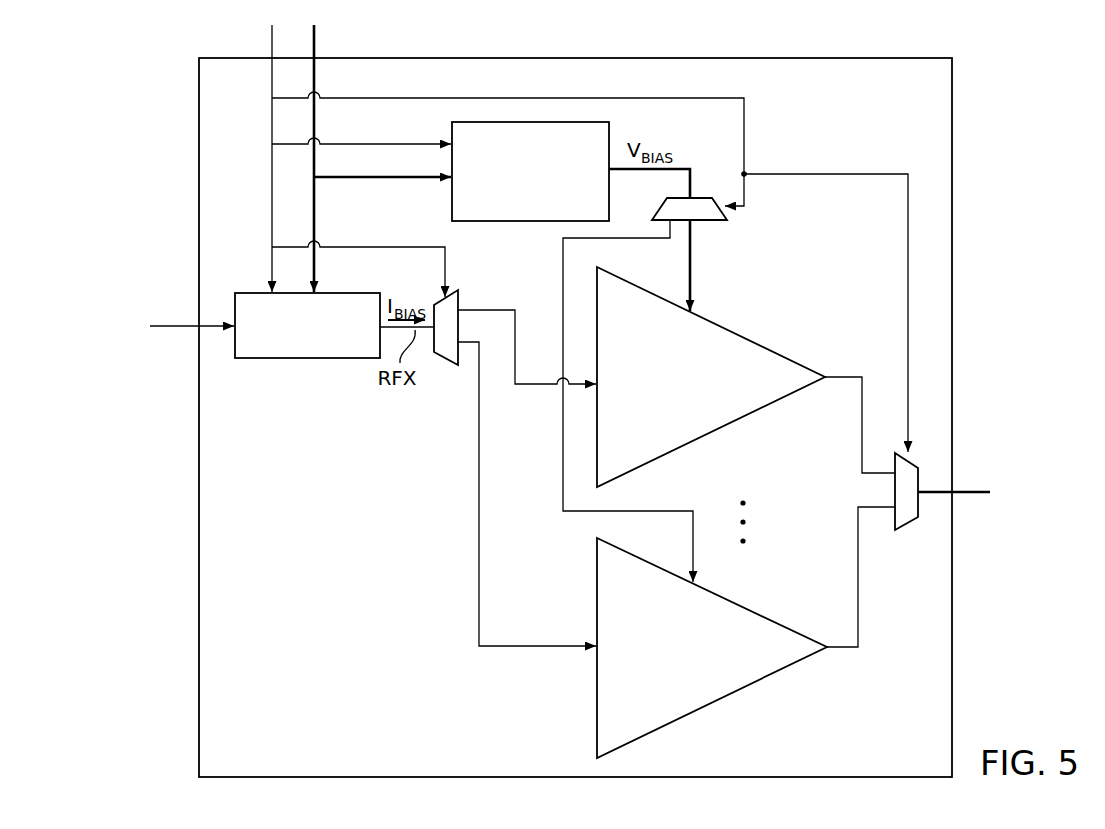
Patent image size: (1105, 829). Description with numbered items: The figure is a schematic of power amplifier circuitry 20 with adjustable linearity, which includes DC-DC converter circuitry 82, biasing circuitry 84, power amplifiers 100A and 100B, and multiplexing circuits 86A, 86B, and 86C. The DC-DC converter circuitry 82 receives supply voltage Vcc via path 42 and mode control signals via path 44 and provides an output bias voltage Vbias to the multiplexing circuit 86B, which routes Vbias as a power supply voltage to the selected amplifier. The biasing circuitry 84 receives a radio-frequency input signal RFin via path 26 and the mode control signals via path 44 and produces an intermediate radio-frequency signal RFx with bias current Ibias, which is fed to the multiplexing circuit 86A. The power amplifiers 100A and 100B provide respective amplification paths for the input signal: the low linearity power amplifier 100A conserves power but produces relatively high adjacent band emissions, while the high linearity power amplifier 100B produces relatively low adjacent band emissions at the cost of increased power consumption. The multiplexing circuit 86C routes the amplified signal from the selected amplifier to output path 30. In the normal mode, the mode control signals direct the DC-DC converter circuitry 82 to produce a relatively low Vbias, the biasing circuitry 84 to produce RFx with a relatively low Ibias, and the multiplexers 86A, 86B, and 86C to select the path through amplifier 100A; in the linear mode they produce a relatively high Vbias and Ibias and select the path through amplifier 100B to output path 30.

The power amplifier circuitry 20 is at (820, 58).
The path 26 is at (180, 328).
The output path 30 is at (975, 493).
The path 42 is at (314, 43).
The path 44 is at (272, 43).
The DC-DC converter circuitry 82 is at (490, 222).
The biasing circuitry 84 is at (300, 359).
The multiplexing circuit 86A is at (447, 366).
The multiplexing circuit 86B is at (713, 221).
The multiplexing circuit 86C is at (908, 531).
The low linearity power amplifier 100A is at (703, 437).
The high linearity power amplifier 100B is at (702, 708).